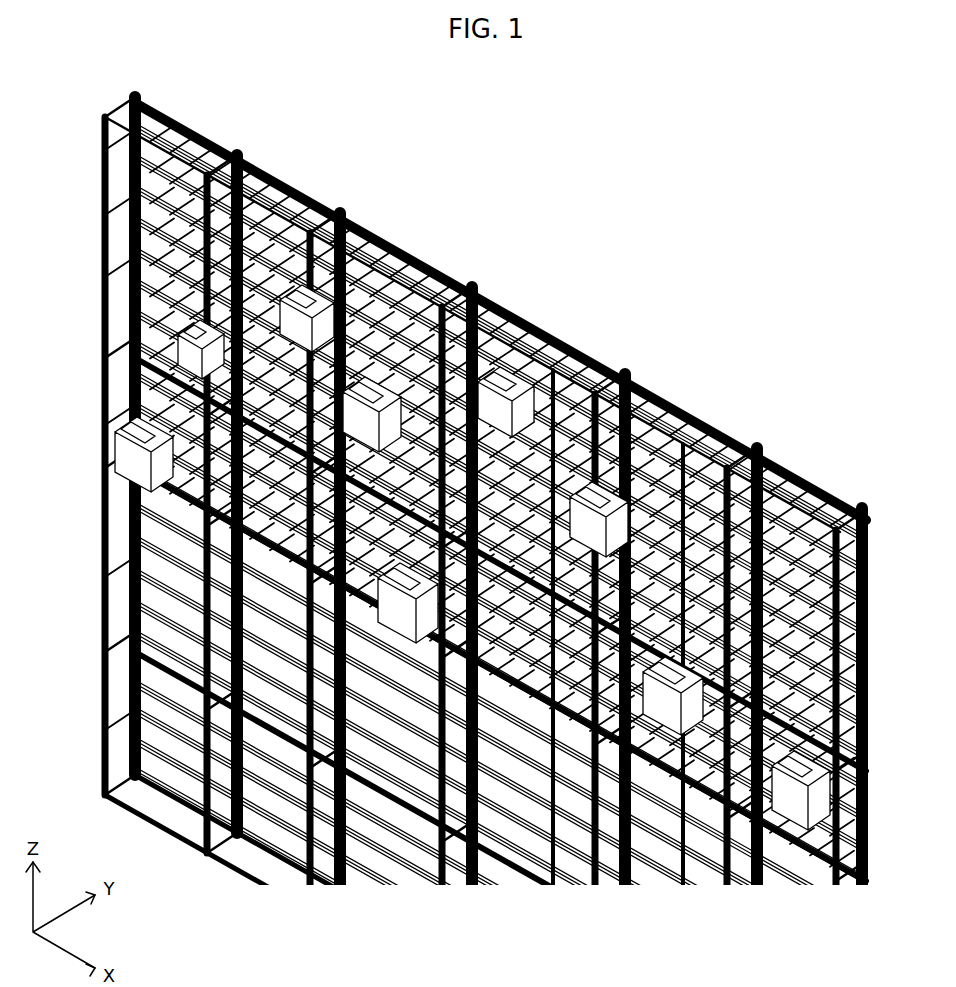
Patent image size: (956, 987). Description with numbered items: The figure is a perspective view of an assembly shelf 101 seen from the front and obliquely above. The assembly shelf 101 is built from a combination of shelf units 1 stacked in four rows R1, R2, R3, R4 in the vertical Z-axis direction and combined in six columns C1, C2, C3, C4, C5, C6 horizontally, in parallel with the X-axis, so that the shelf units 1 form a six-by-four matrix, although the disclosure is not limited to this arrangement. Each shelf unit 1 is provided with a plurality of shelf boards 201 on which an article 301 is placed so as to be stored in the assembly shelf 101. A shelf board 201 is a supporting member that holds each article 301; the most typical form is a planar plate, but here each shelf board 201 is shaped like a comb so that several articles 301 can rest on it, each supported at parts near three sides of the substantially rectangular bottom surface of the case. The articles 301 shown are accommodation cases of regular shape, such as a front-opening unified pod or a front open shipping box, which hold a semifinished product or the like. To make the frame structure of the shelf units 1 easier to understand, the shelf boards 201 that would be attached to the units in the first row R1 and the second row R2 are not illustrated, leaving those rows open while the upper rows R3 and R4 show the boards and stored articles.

The assembly shelf 101 is at (447, 542).
The shelf unit 1 is at (94, 358).
The shelf board 201 is at (167, 493).
The article 301 is at (128, 455).
The first column C1 is at (147, 93).
The second column C2 is at (252, 153).
The third column C3 is at (357, 214).
The fourth column C4 is at (497, 294).
The fifth column C5 is at (637, 374).
The sixth column C6 is at (767, 449).
The first row R1 is at (100, 655).
The second row R2 is at (100, 470).
The third row R3 is at (100, 365).
The fourth row R4 is at (100, 118).